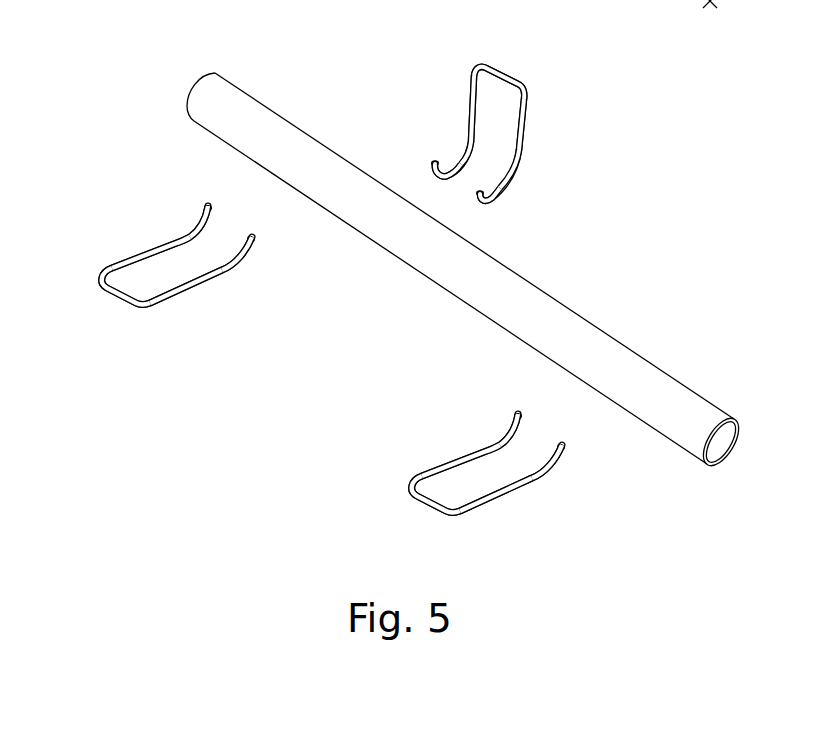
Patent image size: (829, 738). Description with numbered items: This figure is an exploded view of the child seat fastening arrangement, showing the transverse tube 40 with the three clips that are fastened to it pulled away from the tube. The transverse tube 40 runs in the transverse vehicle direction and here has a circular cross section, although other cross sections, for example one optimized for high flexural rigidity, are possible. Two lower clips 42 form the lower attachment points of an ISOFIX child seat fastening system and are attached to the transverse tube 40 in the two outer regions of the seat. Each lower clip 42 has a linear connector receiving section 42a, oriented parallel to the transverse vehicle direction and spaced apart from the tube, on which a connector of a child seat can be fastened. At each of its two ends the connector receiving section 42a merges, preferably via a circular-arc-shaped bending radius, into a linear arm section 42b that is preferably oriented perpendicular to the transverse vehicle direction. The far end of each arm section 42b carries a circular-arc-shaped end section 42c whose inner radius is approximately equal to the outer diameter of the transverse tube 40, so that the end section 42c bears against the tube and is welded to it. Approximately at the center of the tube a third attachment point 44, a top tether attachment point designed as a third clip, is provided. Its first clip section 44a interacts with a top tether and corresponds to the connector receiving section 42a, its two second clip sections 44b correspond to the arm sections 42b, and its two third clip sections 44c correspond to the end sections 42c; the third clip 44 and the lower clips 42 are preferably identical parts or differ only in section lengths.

The transverse tube 40 is at (263, 114).
The lower clip 42 is at (175, 315).
The connector receiving section 42a is at (110, 290).
The arm section 42b is at (132, 255).
The end section 42c is at (198, 218).
The third attachment point 44 is at (536, 86).
The first clip section 44a is at (500, 73).
The second clip section 44b is at (470, 117).
The third clip section 44c is at (427, 172).